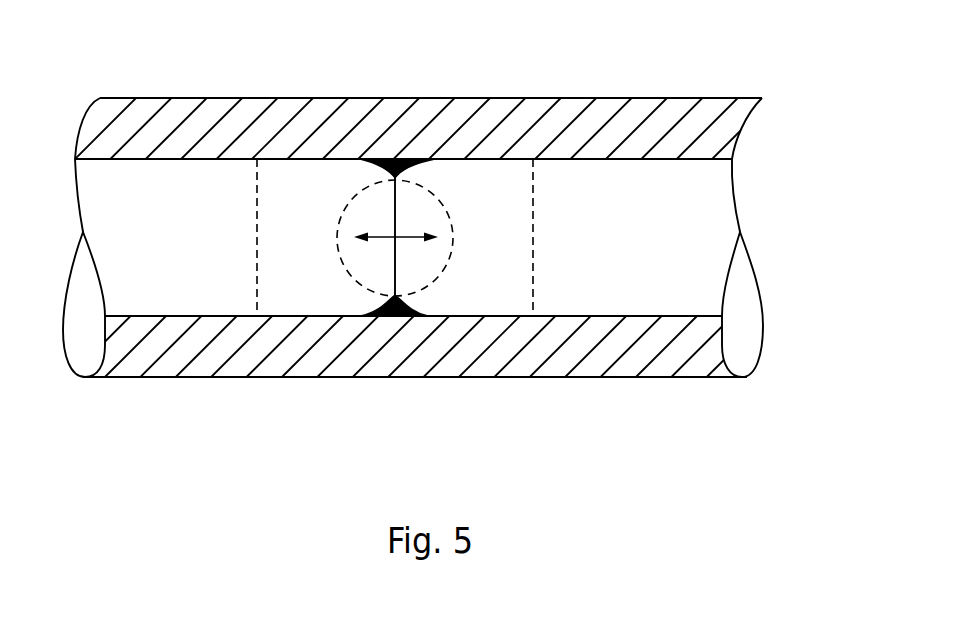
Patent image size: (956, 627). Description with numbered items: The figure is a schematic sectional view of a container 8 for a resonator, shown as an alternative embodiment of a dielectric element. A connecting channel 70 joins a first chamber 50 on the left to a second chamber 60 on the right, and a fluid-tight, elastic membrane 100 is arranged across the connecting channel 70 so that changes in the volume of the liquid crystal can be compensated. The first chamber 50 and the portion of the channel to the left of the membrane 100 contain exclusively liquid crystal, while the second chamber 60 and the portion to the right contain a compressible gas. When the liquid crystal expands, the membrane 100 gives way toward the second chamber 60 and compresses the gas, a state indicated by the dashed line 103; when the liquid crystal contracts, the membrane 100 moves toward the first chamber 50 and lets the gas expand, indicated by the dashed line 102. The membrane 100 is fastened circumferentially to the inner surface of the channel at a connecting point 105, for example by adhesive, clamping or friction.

The tubular body / wall 8 is at (153, 345).
The first chamber 50 is at (195, 187).
The second chamber 60 is at (617, 185).
The connecting channel 70 is at (327, 175).
The membrane 100 is at (397, 206).
The dashed line 102 is at (348, 273).
The dashed line 103 is at (453, 250).
The connecting point 105 is at (415, 310).